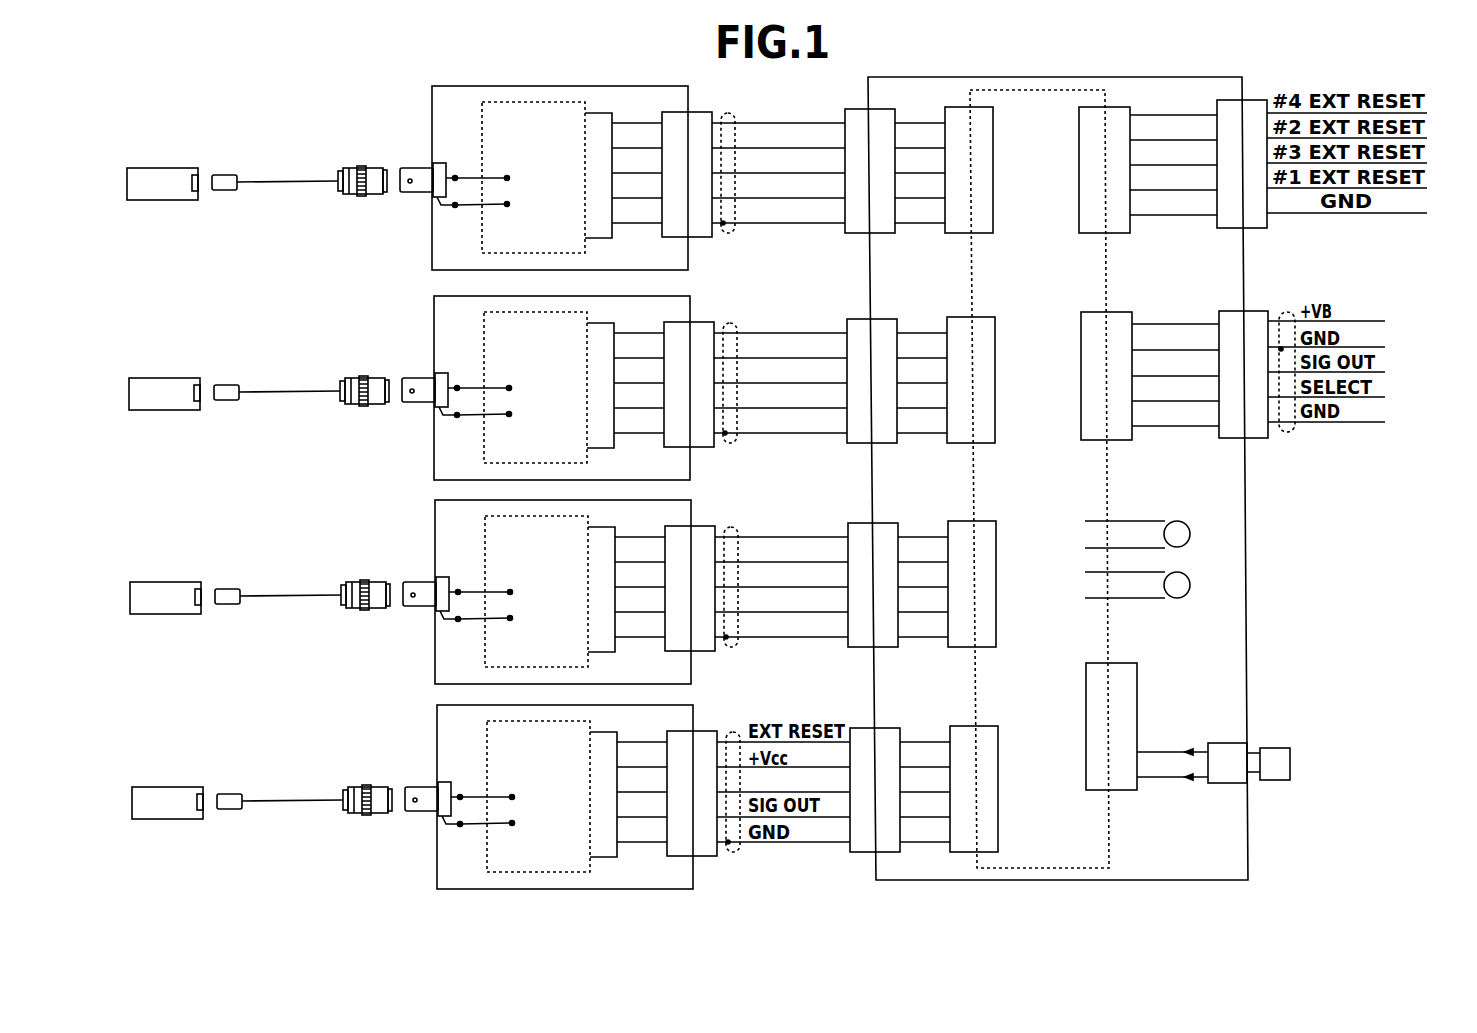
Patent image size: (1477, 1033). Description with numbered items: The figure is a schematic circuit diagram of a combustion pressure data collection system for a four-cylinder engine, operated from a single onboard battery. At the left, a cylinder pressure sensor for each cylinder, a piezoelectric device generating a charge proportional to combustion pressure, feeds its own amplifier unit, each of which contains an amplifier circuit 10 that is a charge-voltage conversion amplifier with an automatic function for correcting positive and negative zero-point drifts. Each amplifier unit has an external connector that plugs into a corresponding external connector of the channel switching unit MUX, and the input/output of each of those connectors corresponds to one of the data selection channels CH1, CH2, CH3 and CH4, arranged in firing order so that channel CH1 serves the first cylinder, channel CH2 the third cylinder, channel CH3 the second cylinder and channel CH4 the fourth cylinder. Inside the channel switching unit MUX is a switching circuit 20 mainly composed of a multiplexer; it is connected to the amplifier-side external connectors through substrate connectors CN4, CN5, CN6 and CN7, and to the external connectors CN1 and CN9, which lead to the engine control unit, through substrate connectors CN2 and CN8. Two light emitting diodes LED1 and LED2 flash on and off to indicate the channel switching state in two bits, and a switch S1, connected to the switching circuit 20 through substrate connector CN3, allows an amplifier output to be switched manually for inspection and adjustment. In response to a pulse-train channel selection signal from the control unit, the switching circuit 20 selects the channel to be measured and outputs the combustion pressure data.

The amplifier circuit 10 is at (482, 142).
The switching circuit 20 is at (1107, 252).
The channel CH1 is at (834, 874).
The channel CH2 is at (832, 669).
The channel CH3 is at (831, 465).
The channel CH4 is at (829, 255).
The external connector CN1 is at (1257, 310).
The substrate connector CN2 is at (1132, 313).
The substrate connector CN3 is at (1137, 665).
The substrate connector CN4 is at (944, 777).
The substrate connector CN5 is at (942, 572).
The substrate connector CN6 is at (941, 368).
The substrate connector CN7 is at (945, 110).
The substrate connector CN8 is at (1130, 108).
The external connector CN9 is at (1255, 100).
The light emitting diode LED1 is at (1184, 574).
The light emitting diode LED2 is at (1184, 523).
The channel switching unit MUX is at (1248, 603).
The switch S1 is at (1272, 748).